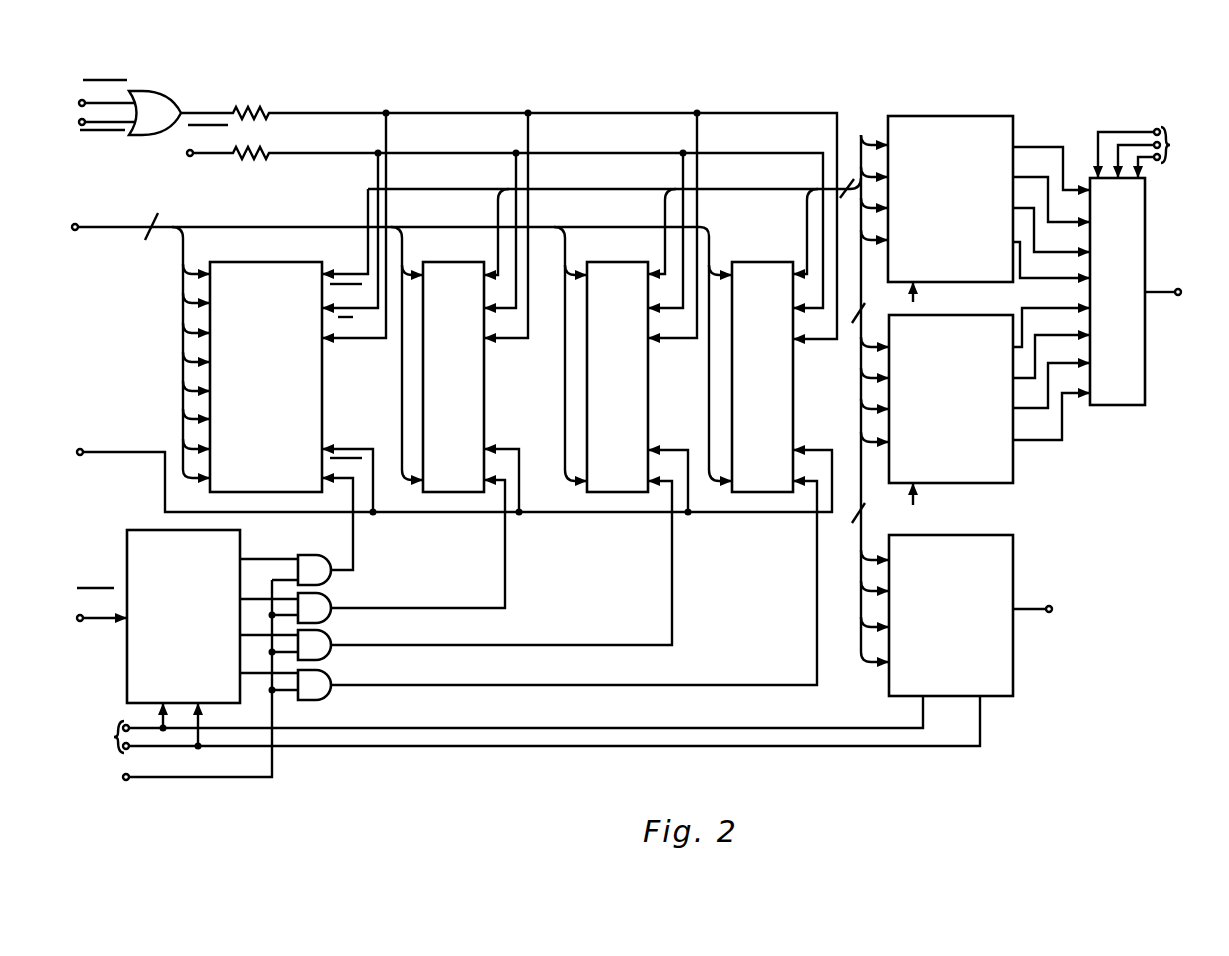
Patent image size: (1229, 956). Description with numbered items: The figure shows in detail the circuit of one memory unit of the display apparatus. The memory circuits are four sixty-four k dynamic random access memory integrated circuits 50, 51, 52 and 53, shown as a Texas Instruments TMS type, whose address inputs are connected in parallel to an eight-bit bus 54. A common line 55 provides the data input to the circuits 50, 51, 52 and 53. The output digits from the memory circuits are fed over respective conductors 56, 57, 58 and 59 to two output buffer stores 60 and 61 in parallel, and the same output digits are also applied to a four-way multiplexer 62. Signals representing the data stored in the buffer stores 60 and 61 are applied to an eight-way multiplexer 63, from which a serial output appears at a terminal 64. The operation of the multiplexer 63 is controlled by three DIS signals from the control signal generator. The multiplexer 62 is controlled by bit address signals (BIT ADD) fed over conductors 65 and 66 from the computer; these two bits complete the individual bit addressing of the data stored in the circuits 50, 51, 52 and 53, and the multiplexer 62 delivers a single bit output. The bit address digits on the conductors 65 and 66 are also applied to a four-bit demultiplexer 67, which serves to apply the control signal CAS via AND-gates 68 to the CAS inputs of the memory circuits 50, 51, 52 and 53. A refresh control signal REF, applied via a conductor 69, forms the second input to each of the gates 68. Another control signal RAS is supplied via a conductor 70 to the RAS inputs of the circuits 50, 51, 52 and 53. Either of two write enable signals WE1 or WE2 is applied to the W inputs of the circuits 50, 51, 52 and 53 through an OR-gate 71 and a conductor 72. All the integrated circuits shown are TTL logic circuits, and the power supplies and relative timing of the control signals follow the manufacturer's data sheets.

The dynamic random access memory integrated circuit 50 is at (265, 262).
The dynamic random access memory integrated circuit 51 is at (446, 262).
The dynamic random access memory integrated circuit 52 is at (610, 262).
The dynamic random access memory integrated circuit 53 is at (753, 262).
The 8-bit bus 54 is at (152, 226).
The common line 55 is at (165, 486).
The conductor 56 is at (368, 208).
The conductor 57 is at (498, 213).
The conductor 58 is at (665, 213).
The conductor 59 is at (807, 213).
The output buffer store 60 is at (957, 122).
The output buffer store 61 is at (957, 315).
The 4-way multiplexer 62 is at (957, 535).
The 8-way multiplexer 63 is at (1133, 224).
The terminal 64 is at (1176, 297).
The conductor 65 is at (432, 728).
The conductor 66 is at (479, 746).
The 4-bit demultiplexer 67 is at (140, 530).
The AND-gates 68 is at (338, 692).
The conductor 69 is at (206, 777).
The conductor 70 is at (330, 153).
The OR-gate 71 is at (164, 104).
The conductor 72 is at (334, 113).